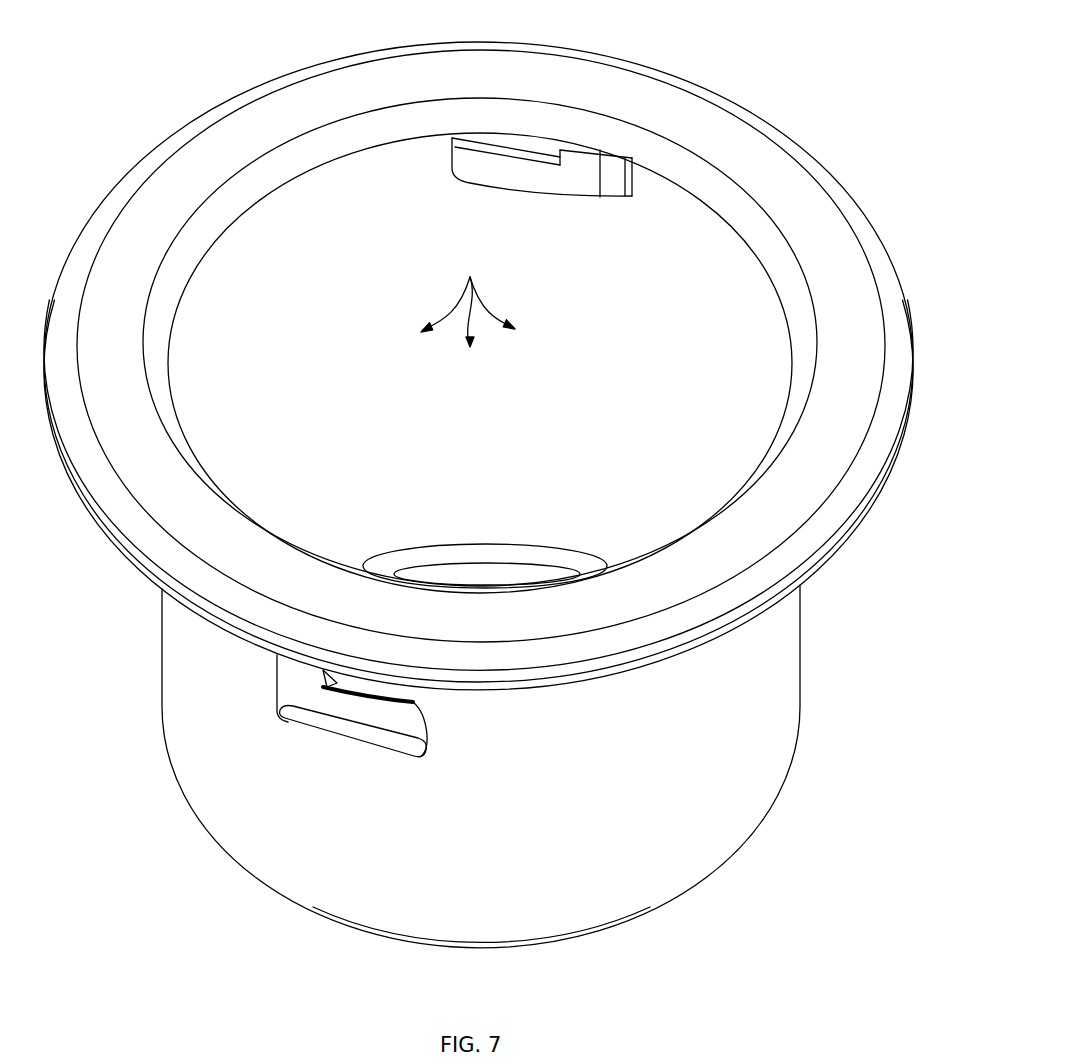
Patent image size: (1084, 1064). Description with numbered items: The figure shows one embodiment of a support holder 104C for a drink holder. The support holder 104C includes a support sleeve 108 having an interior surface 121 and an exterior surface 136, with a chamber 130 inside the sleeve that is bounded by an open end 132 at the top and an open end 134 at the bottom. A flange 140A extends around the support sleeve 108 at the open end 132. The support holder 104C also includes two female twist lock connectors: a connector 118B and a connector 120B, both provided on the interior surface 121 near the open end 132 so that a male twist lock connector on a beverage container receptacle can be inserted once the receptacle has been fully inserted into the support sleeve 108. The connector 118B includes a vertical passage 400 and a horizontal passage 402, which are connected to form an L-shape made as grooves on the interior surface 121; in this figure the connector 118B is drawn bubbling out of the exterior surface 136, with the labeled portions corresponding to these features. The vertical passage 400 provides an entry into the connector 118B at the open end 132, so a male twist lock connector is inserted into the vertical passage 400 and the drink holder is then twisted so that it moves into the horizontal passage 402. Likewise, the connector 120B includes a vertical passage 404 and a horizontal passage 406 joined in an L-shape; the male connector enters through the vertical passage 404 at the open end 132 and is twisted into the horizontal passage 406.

The support holder 104C is at (840, 76).
The flange 140A is at (847, 243).
The open end 132 is at (362, 205).
The interior surface 121 is at (633, 345).
The open end 134 is at (470, 578).
The chamber 130 is at (468, 297).
The support sleeve 108 is at (780, 705).
The exterior surface 136 is at (194, 723).
The connector 120B is at (495, 163).
The vertical passage 404 is at (582, 163).
The horizontal passage 406 is at (540, 175).
The vertical passage 400 is at (287, 677).
The connector 118B is at (333, 708).
The horizontal passage 402 is at (392, 730).